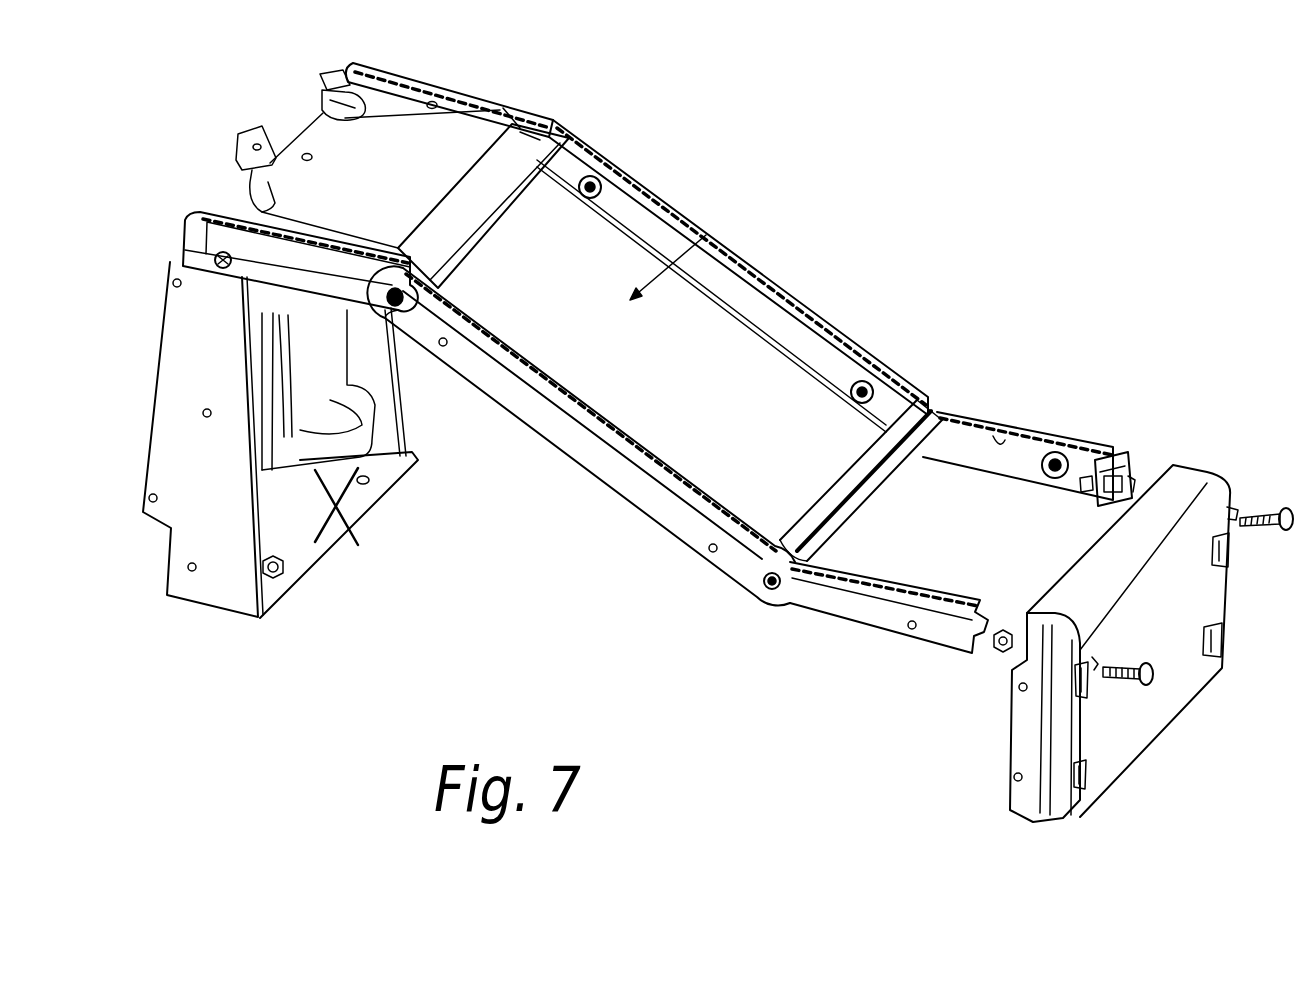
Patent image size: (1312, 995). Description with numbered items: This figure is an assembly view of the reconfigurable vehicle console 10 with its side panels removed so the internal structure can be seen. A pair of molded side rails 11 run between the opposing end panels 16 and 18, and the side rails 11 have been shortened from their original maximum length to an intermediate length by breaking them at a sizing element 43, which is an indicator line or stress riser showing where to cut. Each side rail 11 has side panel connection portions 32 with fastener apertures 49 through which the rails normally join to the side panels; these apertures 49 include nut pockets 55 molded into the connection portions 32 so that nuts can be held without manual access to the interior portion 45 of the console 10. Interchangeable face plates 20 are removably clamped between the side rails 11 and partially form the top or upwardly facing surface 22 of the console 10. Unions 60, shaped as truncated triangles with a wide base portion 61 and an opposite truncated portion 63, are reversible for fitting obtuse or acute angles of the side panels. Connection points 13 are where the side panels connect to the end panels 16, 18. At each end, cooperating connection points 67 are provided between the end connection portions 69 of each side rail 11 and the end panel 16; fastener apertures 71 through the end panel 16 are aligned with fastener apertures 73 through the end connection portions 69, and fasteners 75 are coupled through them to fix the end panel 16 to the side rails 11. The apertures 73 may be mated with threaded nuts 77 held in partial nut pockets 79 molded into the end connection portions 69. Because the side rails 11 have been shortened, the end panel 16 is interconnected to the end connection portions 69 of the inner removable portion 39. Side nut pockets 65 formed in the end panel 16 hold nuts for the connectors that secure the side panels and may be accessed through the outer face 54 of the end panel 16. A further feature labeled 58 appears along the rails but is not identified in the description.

The reconfigurable vehicle console 10 is at (284, 78).
The side rails 11 is at (642, 182).
The connection points 13 is at (204, 416).
The end panel 16 is at (1222, 483).
The end panel 18 is at (205, 610).
The face plates 20 is at (382, 197).
The top or upwardly facing surface 22 is at (822, 230).
The side panel connection portions 32 is at (1017, 474).
The removable portion 39 is at (993, 448).
The sizing element 43 is at (956, 418).
The interior portion 45 is at (706, 233).
The fastener apertures 49 is at (215, 270).
The outer face 54 is at (1184, 632).
The nut pockets 55 is at (597, 170).
The slot 58 is at (680, 215).
The unions 60 is at (499, 110).
The wide base portion 61 is at (539, 130).
The truncated portion 63 is at (497, 228).
The side nut pockets 65 is at (1228, 570).
The cooperating connection points 67 is at (1168, 433).
The end connection portions 69 is at (1112, 450).
The fastener apertures 71 is at (1234, 508).
The fastener apertures 73 is at (1128, 476).
The fasteners 75 is at (1262, 530).
The threaded nuts 77 is at (1076, 480).
The partial nut pockets 79 is at (1101, 497).